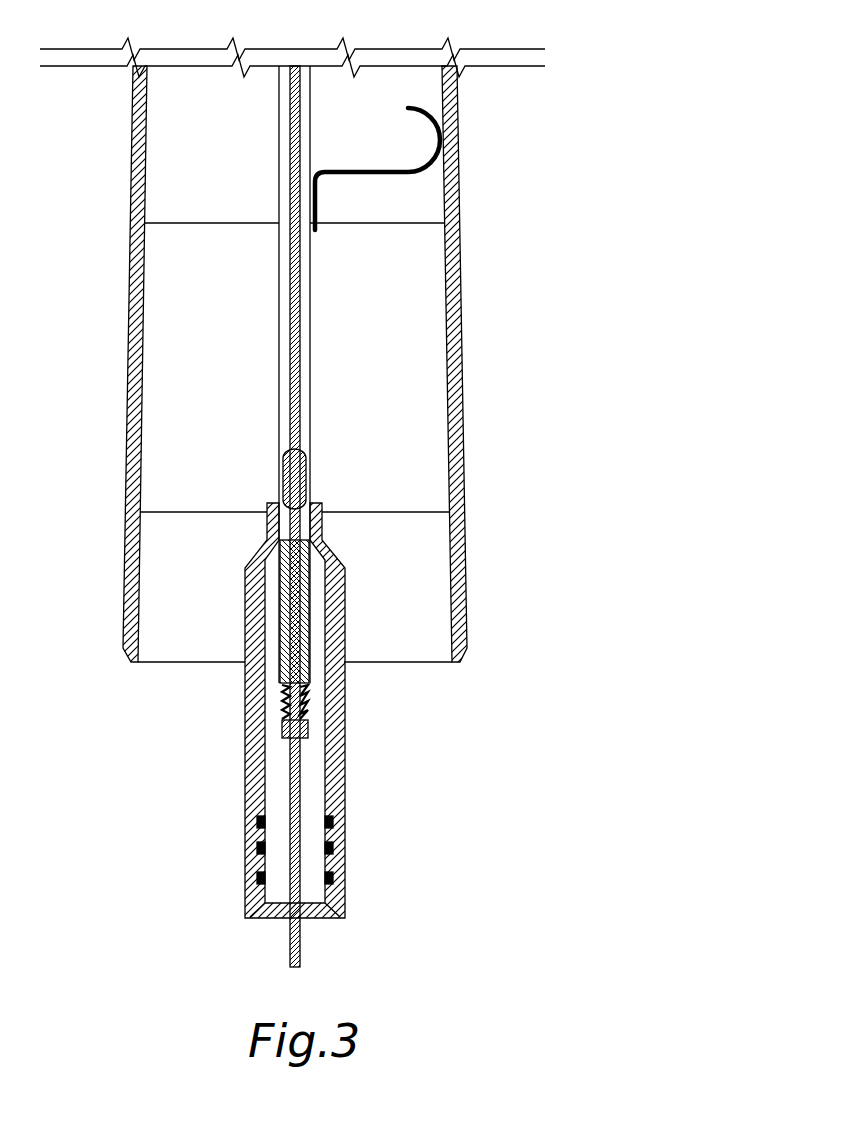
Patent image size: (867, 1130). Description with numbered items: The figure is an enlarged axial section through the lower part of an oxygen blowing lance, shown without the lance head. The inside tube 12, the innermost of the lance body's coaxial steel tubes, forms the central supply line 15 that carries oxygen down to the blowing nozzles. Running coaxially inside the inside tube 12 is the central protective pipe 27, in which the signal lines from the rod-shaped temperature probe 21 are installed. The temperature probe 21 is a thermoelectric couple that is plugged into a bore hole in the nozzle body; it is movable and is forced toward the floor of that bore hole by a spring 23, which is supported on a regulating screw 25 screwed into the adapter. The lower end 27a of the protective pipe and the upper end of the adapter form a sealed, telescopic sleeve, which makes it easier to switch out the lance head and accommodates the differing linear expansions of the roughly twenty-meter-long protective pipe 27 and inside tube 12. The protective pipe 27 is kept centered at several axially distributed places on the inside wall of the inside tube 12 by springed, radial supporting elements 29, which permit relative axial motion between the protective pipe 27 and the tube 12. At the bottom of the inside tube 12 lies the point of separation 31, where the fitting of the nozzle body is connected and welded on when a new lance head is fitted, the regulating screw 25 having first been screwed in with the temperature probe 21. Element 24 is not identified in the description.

The inside tube 12 is at (457, 563).
The central supply line 15 is at (392, 328).
The temperature probe 21 is at (300, 938).
The spring 23 is at (308, 702).
The nut 24 is at (308, 730).
The regulating screw 25 is at (310, 623).
The central protective pipe 27 is at (310, 374).
The lower end of the protective pipe 27a is at (339, 862).
The springed radial supporting element 29 is at (408, 172).
The point of separation 31 is at (457, 661).